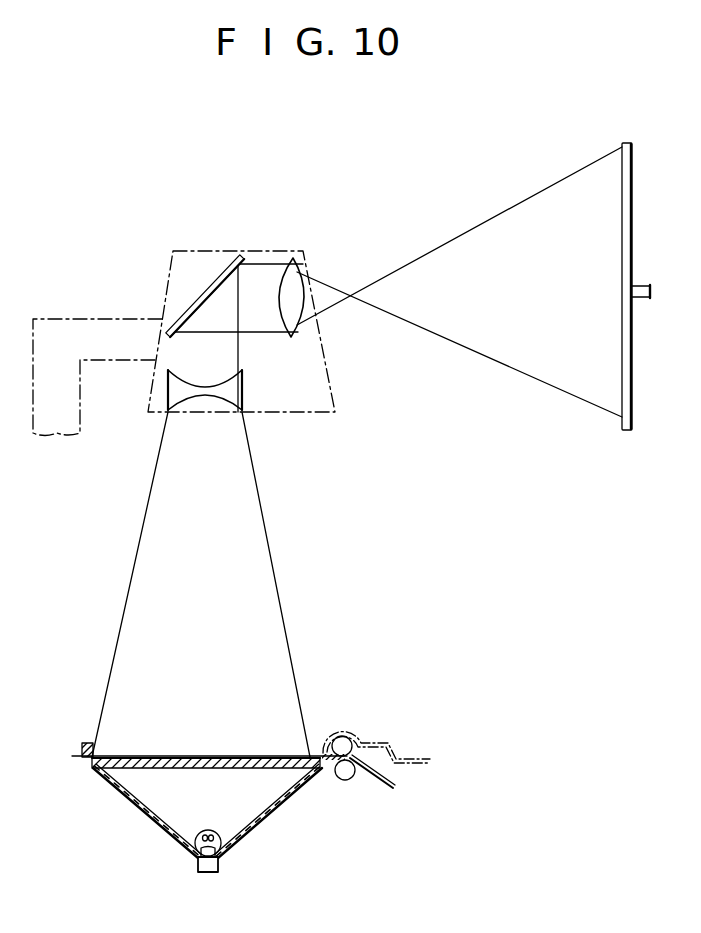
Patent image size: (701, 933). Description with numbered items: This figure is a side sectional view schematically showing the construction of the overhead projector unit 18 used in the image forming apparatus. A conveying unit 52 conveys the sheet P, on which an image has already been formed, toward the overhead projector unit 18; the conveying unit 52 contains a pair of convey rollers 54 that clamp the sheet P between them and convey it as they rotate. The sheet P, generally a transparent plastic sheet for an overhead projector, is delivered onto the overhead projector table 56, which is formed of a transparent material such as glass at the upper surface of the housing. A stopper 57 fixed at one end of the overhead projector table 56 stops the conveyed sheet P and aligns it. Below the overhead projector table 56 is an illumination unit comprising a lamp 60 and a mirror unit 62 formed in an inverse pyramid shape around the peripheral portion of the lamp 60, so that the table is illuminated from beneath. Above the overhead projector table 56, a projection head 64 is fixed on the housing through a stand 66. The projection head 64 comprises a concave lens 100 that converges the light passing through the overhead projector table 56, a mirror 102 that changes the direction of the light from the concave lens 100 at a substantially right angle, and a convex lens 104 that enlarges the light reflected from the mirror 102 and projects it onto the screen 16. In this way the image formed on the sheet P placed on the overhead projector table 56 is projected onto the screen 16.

The screen 16 is at (633, 360).
The overhead projector unit 18 is at (283, 472).
The conveying unit 52 is at (410, 748).
The convey rollers 54 is at (344, 735).
The overhead projector table 56 is at (185, 770).
The stopper 57 is at (88, 740).
The lamp 60 is at (222, 838).
The mirror unit 62 is at (283, 800).
The projection head 64 is at (313, 399).
The stand 66 is at (107, 328).
The concave lens 100 is at (243, 383).
The mirror 102 is at (212, 280).
The convex lens 104 is at (290, 280).
The sheet P is at (242, 755).